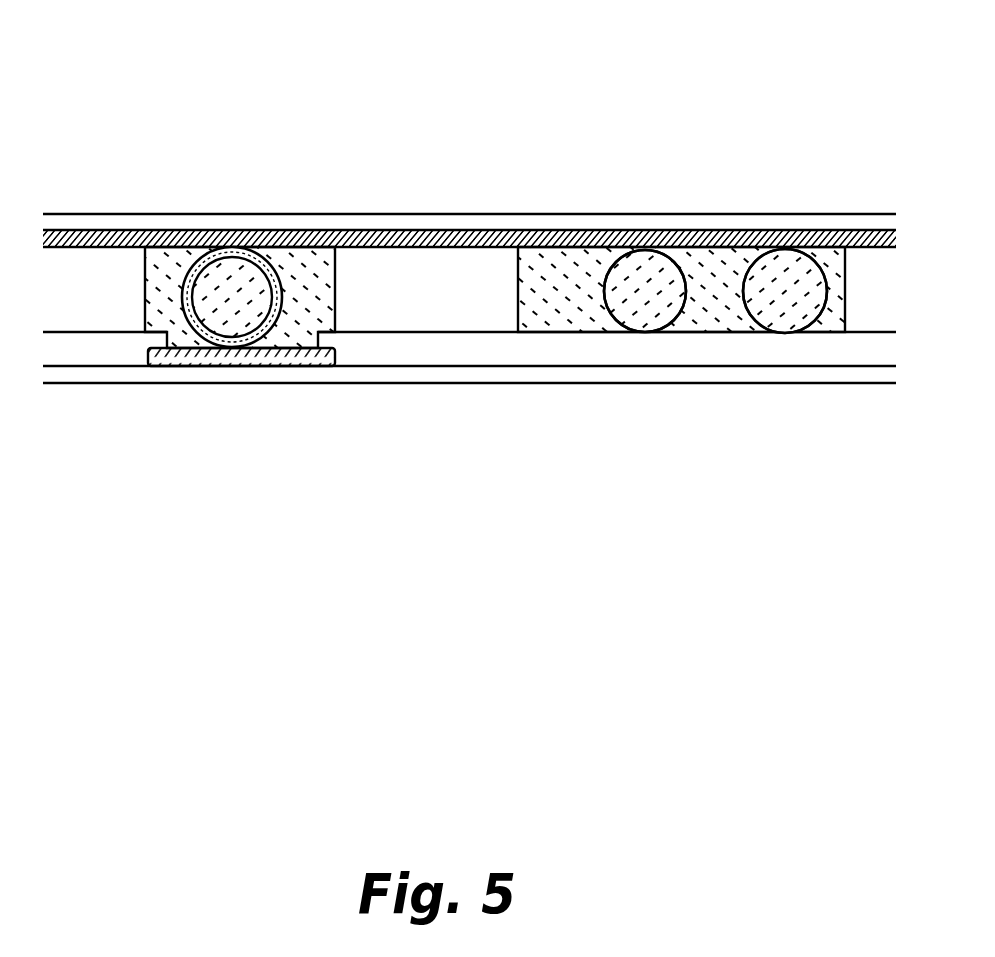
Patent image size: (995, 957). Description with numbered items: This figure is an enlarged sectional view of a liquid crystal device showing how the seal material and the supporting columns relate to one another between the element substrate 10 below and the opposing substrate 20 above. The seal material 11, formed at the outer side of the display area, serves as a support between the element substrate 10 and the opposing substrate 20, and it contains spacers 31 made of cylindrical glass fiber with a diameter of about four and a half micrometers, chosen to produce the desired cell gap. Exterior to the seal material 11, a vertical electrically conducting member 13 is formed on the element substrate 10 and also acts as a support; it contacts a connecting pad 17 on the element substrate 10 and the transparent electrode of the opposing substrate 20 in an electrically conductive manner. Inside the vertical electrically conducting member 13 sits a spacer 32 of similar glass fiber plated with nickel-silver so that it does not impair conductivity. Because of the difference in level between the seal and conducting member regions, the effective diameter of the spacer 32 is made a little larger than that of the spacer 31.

The element substrate 10 is at (468, 593).
The opposing substrate 20 is at (417, 77).
The seal material 11 is at (560, 232).
The vertical electrically conducting member 13 is at (145, 266).
The connecting pad 17 is at (190, 368).
The spacer 31 is at (753, 259).
The spacer 32 is at (268, 262).